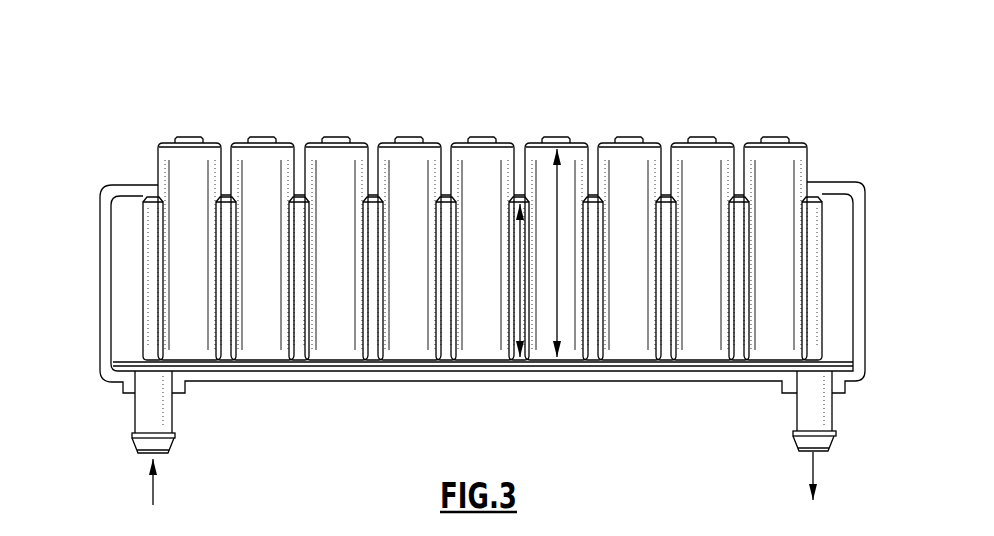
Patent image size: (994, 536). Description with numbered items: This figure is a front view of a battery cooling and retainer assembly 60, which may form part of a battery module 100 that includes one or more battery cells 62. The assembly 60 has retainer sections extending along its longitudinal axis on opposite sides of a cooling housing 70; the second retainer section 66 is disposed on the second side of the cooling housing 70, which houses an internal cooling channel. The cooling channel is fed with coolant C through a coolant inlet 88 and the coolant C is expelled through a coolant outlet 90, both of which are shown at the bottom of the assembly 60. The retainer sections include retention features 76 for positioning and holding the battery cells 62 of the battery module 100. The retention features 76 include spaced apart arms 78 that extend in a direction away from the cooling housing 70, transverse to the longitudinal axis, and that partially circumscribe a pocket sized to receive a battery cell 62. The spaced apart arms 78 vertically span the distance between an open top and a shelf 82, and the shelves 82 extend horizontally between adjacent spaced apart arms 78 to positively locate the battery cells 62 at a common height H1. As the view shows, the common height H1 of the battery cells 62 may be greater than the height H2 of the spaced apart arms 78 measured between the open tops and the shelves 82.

The battery module 100 is at (506, 90).
The battery cooling and retainer assembly 60 is at (845, 180).
The battery cells 62 is at (241, 142).
The second retainer section 66 is at (124, 239).
The cooling housing 70 is at (120, 188).
The retention features 76 is at (477, 330).
The spaced apart arms 78 is at (156, 196).
The shelf 82 is at (500, 366).
The coolant inlet 88 is at (168, 415).
The coolant outlet 90 is at (807, 408).
The height H1 is at (560, 251).
The height H2 is at (519, 268).
The coolant C is at (153, 486).